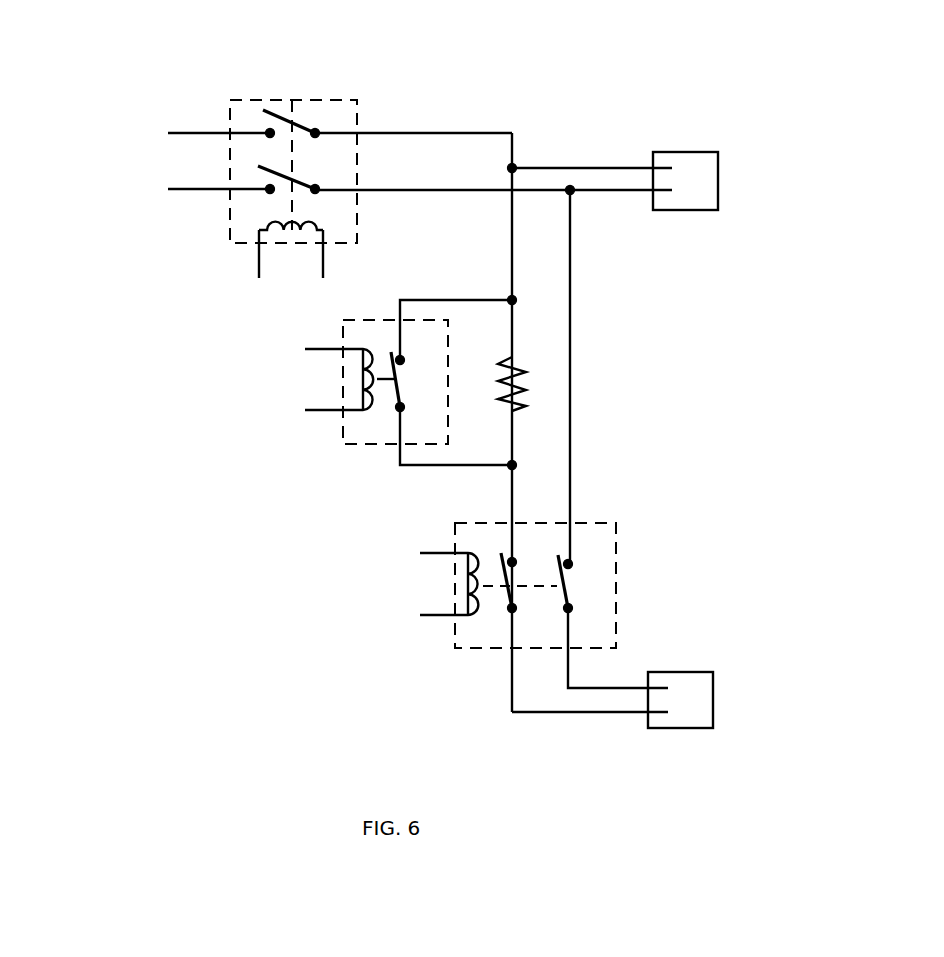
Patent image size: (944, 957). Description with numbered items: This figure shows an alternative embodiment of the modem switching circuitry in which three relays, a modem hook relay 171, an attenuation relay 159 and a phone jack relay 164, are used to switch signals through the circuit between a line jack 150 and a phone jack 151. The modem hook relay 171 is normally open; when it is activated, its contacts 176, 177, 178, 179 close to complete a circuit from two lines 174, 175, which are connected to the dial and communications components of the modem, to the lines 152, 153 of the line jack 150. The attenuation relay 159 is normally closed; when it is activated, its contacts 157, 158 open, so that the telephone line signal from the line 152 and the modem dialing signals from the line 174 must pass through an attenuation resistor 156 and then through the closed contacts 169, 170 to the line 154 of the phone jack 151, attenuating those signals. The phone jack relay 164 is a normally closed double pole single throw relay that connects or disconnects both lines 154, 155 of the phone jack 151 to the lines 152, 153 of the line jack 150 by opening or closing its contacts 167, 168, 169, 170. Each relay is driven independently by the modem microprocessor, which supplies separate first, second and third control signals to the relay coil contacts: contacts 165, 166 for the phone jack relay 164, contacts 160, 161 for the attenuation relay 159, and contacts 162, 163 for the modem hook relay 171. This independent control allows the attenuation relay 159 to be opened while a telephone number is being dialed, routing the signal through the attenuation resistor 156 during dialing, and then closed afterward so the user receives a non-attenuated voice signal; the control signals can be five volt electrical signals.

The line jack 150 is at (685, 210).
The phone jack 151 is at (683, 728).
The line of the line jack 152 is at (615, 168).
The line of the line jack 153 is at (613, 193).
The line of the phone jack 154 is at (620, 715).
The line of the phone jack 155 is at (632, 687).
The attenuation resistor 156 is at (523, 367).
The contact of the attenuation relay 157 is at (399, 362).
The contact of the attenuation relay 158 is at (398, 409).
The attenuation relay 159 is at (340, 434).
The relay coil contact 160 is at (318, 348).
The relay coil contact 161 is at (318, 410).
The relay coil contact 162 is at (259, 262).
The relay coil contact 163 is at (323, 266).
The phone jack relay 164 is at (455, 655).
The relay coil contact 165 is at (433, 553).
The relay coil contact 166 is at (433, 615).
The contact of the phone jack relay 167 is at (570, 563).
The contact of the phone jack relay 168 is at (570, 608).
The contact of the phone jack relay 169 is at (514, 561).
The contact of the phone jack relay 170 is at (514, 607).
The modem hook relay 171 is at (315, 98).
The line 174 is at (185, 134).
The line 175 is at (182, 190).
The contact of the modem hook relay 176 is at (268, 128).
The contact of the modem hook relay 177 is at (319, 137).
The contact of the modem hook relay 178 is at (267, 193).
The contact of the modem hook relay 179 is at (319, 193).